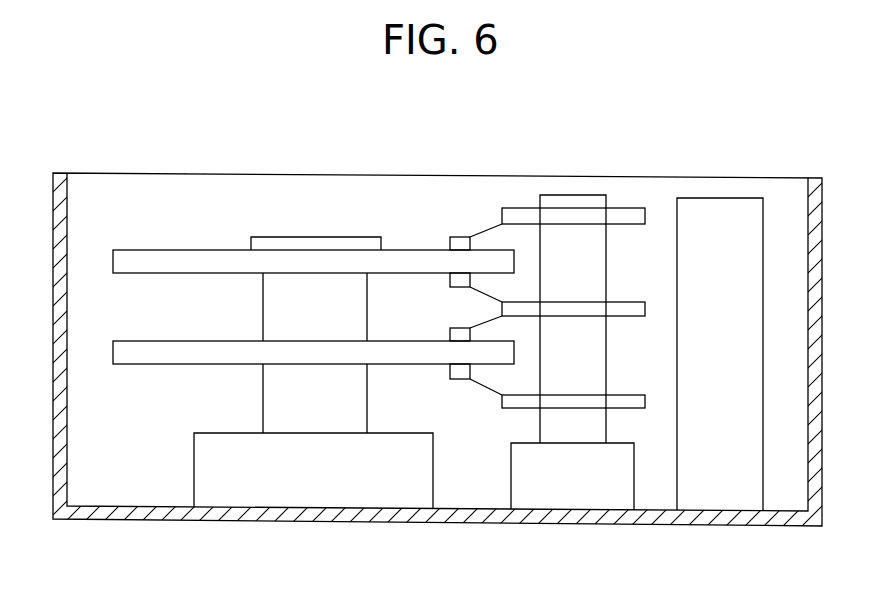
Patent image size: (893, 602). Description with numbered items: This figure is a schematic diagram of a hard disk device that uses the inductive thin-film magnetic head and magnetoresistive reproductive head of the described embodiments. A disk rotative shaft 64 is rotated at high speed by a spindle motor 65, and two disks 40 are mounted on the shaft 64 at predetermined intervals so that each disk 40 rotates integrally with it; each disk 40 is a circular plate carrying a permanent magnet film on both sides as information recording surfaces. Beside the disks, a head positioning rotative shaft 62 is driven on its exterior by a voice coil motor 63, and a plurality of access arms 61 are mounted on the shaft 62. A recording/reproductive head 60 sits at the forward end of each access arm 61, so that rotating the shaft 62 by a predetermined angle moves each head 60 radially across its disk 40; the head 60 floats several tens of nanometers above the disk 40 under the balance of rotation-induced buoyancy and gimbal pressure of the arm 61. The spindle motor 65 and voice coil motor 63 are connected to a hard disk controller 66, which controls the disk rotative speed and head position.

The disk 40 is at (206, 353).
The recording/reproductive head 60 is at (460, 242).
The access arm 61 is at (518, 216).
The head positioning rotative shaft 62 is at (578, 204).
The voice coil motor 63 is at (573, 487).
The disk rotative shaft 64 is at (297, 422).
The spindle motor 65 is at (369, 487).
The hard disk controller 66 is at (719, 205).